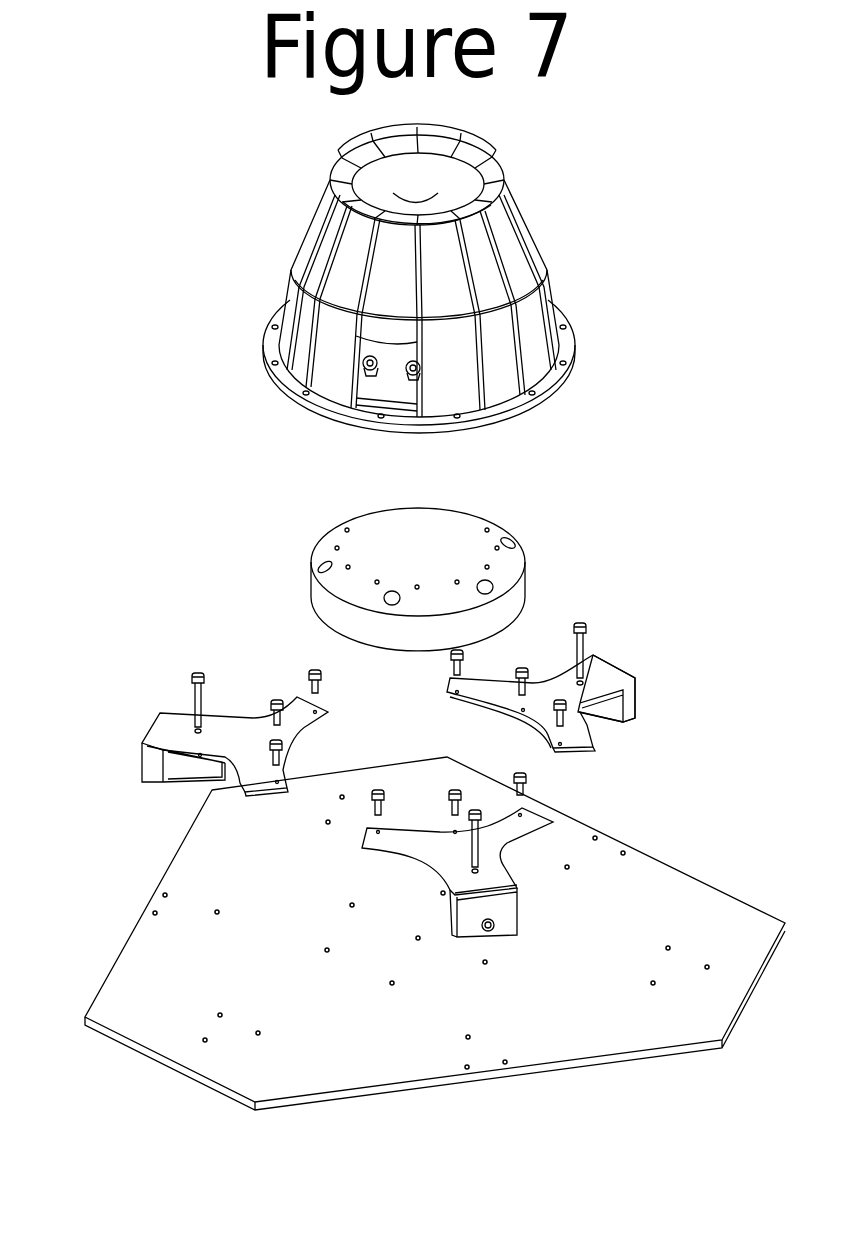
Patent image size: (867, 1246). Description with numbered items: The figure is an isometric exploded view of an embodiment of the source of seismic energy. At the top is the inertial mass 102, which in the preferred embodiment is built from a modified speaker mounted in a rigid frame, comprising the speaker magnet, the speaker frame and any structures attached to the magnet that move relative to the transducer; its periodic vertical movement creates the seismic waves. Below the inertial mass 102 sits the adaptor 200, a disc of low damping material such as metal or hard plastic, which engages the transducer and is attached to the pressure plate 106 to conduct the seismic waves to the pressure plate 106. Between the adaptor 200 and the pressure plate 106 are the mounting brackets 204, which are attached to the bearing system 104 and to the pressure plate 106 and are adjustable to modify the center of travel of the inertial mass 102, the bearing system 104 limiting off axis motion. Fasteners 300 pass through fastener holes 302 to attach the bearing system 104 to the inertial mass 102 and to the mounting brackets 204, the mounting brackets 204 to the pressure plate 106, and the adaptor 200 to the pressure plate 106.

The inertial mass 102 is at (535, 232).
The fasteners 300 is at (360, 370).
The fastener holes 302 is at (321, 563).
The adaptor 200 is at (525, 562).
The mounting brackets 204 is at (637, 700).
The bearing system 104 is at (573, 750).
The pressure plate 106 is at (502, 1075).